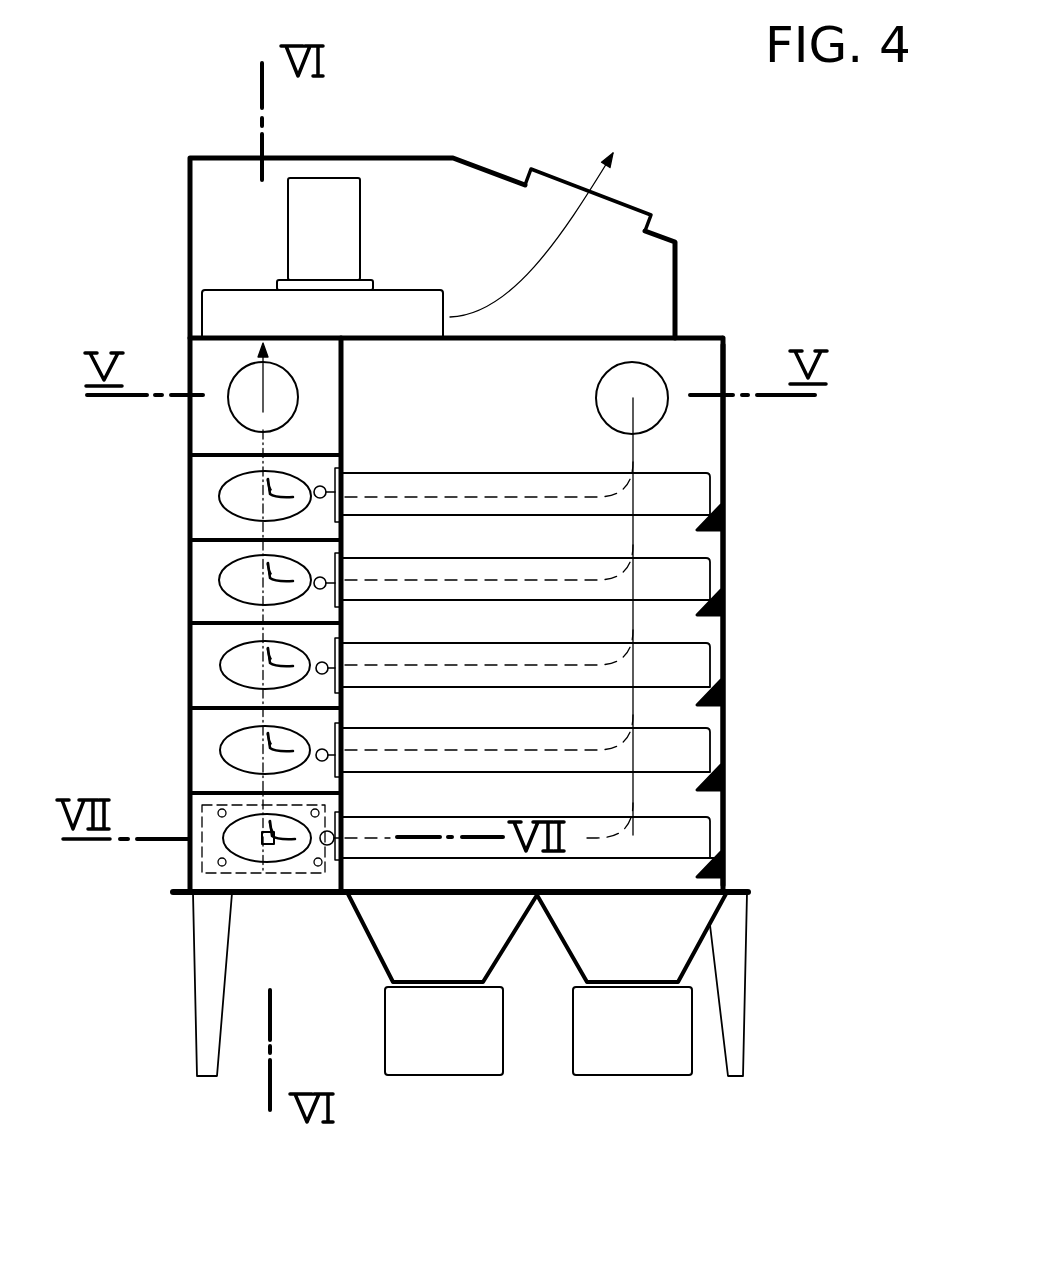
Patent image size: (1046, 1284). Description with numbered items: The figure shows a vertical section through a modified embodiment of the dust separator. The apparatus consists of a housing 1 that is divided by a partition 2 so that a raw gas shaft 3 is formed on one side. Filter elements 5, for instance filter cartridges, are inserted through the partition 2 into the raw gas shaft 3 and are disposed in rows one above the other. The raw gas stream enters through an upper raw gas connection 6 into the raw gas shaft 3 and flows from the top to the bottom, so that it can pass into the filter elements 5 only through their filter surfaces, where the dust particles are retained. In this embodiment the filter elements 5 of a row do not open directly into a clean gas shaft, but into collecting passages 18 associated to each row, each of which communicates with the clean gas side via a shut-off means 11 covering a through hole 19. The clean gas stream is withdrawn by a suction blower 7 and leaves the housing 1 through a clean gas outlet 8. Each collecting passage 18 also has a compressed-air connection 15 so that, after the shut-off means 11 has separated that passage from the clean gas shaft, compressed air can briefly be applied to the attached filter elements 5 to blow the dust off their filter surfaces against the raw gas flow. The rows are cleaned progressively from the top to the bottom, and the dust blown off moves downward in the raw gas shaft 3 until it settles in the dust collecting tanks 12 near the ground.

The housing 1 is at (728, 697).
The partition 2 is at (345, 402).
The raw gas shaft 3 is at (692, 443).
The filter elements 5 is at (692, 492).
The upper raw gas connection 6 is at (645, 387).
The suction blower 7 is at (242, 312).
The clean gas outlet 8 is at (603, 203).
The shut-off means 11 is at (222, 843).
The dust collecting tanks 12 is at (590, 1052).
The compressed-air connection 15 is at (333, 578).
The collecting passages 18 is at (212, 557).
The through holes 19 is at (247, 495).